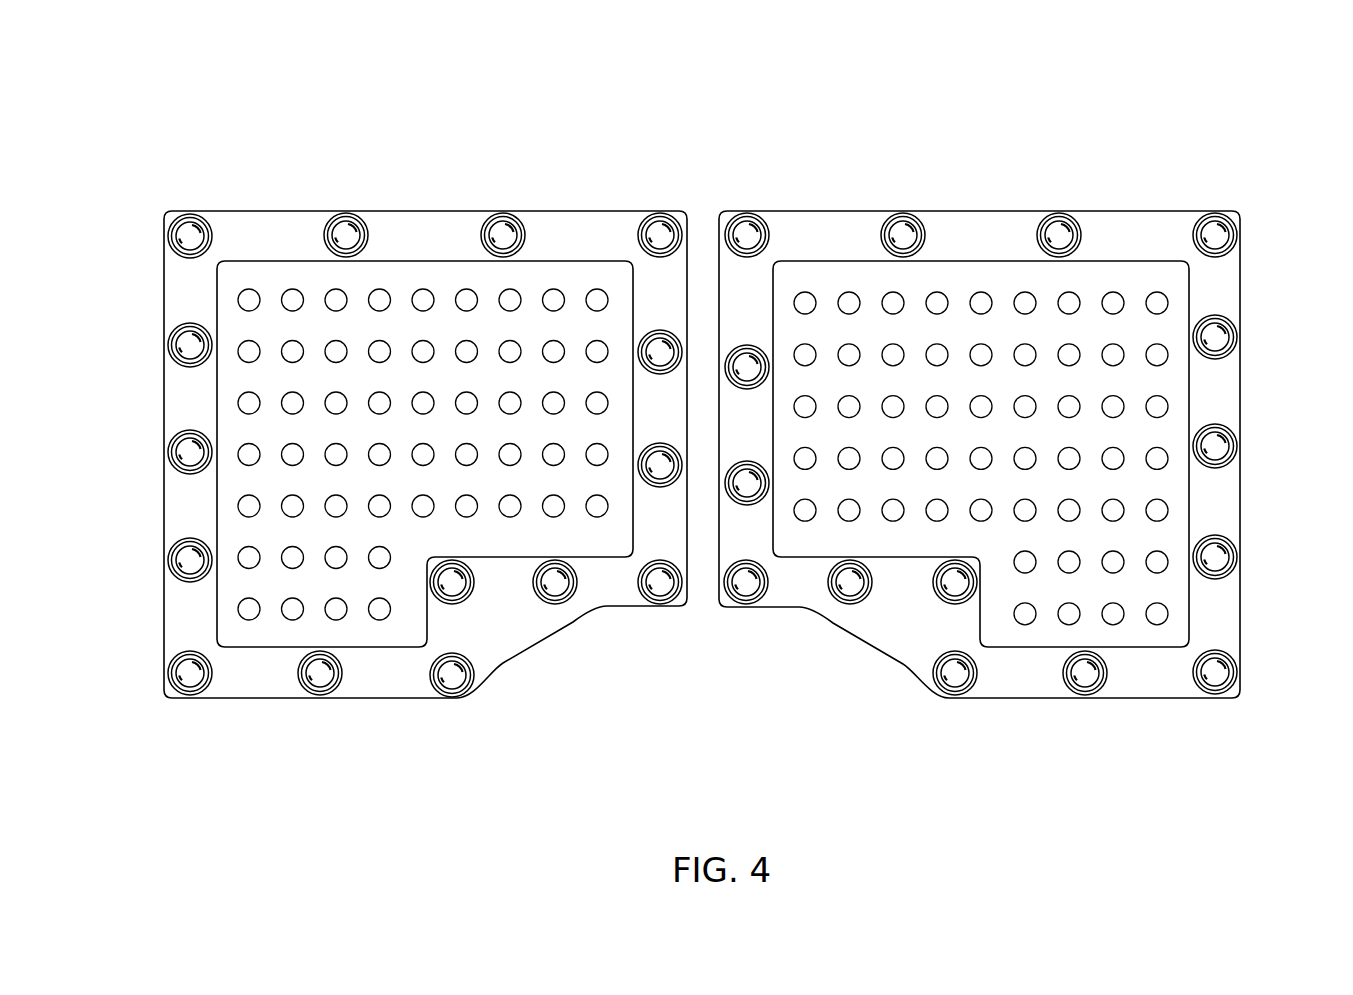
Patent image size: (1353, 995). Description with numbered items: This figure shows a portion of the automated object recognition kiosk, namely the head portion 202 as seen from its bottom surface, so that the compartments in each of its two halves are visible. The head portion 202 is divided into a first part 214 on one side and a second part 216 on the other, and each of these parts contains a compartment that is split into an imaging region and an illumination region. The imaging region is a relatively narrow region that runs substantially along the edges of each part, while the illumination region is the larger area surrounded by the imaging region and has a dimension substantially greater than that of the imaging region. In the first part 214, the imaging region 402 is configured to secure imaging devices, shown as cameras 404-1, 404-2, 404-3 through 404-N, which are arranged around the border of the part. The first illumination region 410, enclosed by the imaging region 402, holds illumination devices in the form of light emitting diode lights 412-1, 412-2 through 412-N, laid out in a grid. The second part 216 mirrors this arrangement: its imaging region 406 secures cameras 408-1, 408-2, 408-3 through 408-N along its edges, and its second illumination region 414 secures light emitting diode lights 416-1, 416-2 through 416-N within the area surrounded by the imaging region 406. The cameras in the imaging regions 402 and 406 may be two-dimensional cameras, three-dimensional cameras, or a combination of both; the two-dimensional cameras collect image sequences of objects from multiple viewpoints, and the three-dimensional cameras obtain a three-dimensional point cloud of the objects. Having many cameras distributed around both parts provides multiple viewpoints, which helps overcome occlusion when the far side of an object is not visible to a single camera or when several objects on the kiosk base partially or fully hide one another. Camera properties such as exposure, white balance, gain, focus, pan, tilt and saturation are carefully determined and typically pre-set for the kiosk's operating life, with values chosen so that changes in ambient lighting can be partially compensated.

The head portion 202 is at (708, 58).
The imaging region 402 is at (500, 662).
The first part 214 is at (573, 622).
The first illumination region 410 is at (357, 636).
The camera 404-1 is at (167, 228).
The camera 404-2 is at (167, 338).
The camera 404-3 is at (167, 447).
The camera 404-N is at (167, 662).
The light emitting diode (LED) light 412-1 is at (551, 290).
The light emitting diode (LED) light 412-2 is at (418, 290).
The light emitting diode (LED) light 412-N is at (291, 290).
The imaging region 406 is at (900, 660).
The second part 216 is at (830, 620).
The second illumination region 414 is at (1045, 636).
The camera 408-1 is at (1239, 228).
The camera 408-2 is at (1239, 330).
The camera 408-3 is at (1239, 440).
The camera 408-N is at (1239, 662).
The LED light 416-1 is at (851, 294).
The LED light 416-2 is at (983, 294).
The LED light 416-N is at (1114, 294).